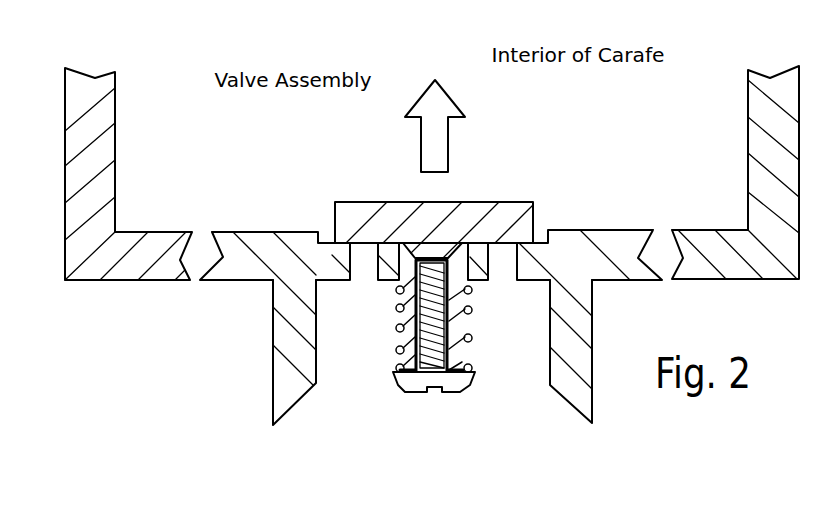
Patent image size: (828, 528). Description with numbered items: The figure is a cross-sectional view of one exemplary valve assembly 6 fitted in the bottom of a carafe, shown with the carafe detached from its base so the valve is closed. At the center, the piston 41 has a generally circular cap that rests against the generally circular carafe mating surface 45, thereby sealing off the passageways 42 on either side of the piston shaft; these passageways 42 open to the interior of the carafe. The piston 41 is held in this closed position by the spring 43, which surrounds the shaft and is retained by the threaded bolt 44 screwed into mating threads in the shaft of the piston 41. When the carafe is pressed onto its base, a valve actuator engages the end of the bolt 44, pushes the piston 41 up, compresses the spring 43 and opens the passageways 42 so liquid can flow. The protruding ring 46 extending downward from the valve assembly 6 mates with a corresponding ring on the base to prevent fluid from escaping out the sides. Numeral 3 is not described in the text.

The carafe wall 3 is at (105, 113).
The valve assembly 6 is at (338, 178).
The piston 41 is at (518, 210).
The passageways 42 is at (365, 275).
The spring 43 is at (392, 352).
The threaded bolt 44 is at (453, 382).
The carafe mating surface 45 is at (328, 238).
The protruding ring 46 is at (320, 352).